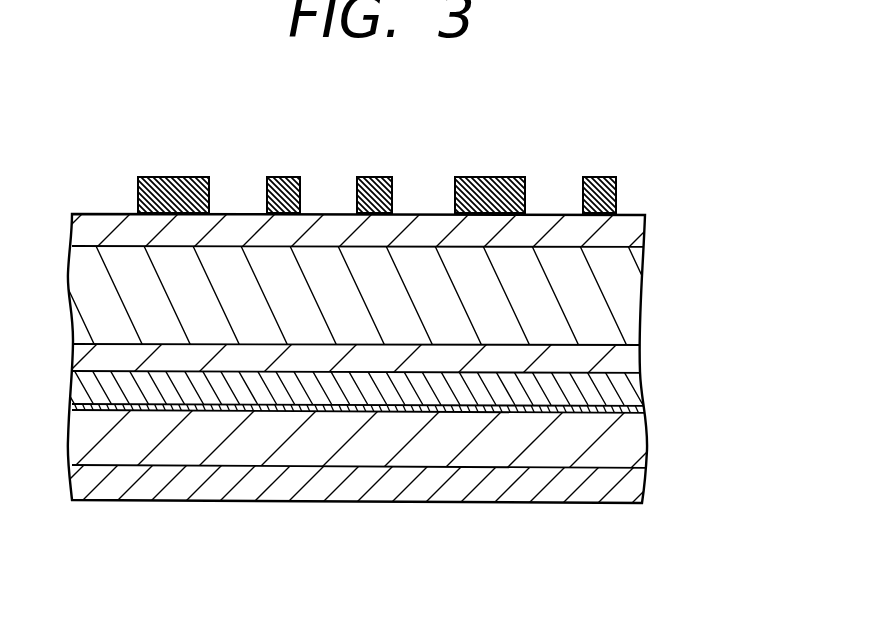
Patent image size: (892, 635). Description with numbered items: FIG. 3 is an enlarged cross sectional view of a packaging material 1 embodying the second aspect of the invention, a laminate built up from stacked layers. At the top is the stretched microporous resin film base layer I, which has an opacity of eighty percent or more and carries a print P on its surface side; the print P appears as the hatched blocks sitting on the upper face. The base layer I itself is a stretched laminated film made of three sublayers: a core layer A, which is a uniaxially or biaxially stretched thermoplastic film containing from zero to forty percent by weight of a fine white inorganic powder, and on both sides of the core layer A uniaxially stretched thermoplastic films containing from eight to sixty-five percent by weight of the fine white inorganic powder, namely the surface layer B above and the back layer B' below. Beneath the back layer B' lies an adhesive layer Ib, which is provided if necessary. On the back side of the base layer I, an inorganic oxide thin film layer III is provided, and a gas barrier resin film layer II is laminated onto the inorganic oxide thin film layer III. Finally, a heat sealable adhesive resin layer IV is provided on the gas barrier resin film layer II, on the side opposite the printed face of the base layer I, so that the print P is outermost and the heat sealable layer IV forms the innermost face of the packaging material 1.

The laminated structure 1 is at (574, 131).
The print P is at (618, 190).
The stretched microporous resin film base layer I is at (722, 372).
The surface layer B is at (373, 233).
The core layer A is at (628, 280).
The back layer B' is at (385, 360).
The adhesive layer Ib is at (630, 392).
The inorganic oxide thin film layer III is at (643, 410).
The gas barrier resin film layer II is at (676, 415).
The heat sealable adhesive resin layer IV is at (676, 470).